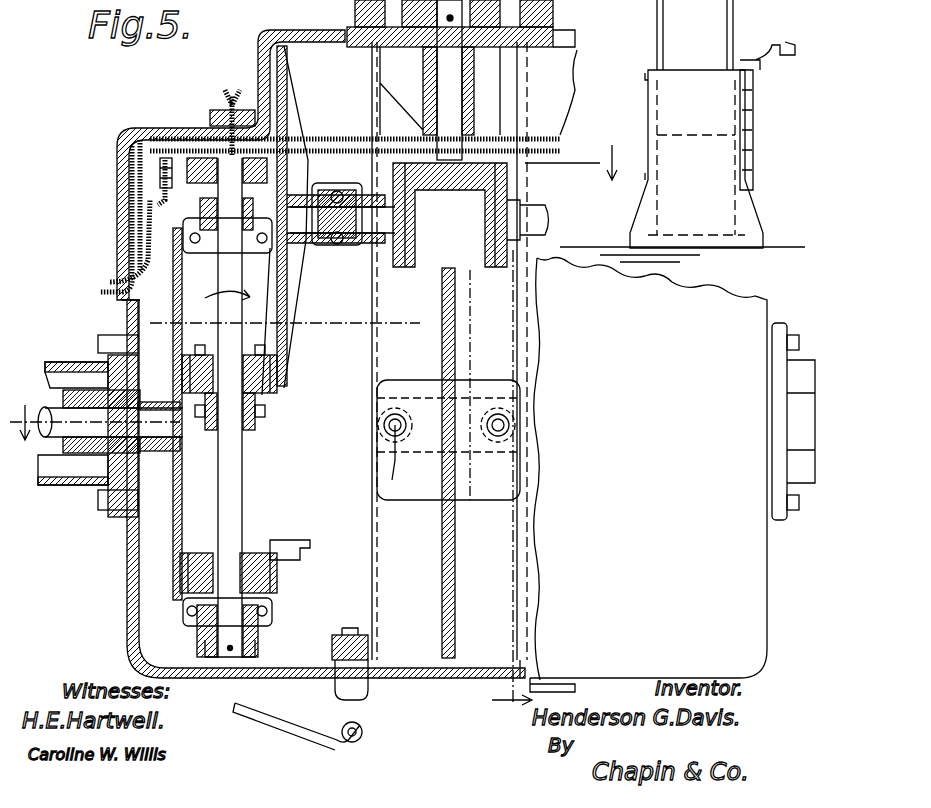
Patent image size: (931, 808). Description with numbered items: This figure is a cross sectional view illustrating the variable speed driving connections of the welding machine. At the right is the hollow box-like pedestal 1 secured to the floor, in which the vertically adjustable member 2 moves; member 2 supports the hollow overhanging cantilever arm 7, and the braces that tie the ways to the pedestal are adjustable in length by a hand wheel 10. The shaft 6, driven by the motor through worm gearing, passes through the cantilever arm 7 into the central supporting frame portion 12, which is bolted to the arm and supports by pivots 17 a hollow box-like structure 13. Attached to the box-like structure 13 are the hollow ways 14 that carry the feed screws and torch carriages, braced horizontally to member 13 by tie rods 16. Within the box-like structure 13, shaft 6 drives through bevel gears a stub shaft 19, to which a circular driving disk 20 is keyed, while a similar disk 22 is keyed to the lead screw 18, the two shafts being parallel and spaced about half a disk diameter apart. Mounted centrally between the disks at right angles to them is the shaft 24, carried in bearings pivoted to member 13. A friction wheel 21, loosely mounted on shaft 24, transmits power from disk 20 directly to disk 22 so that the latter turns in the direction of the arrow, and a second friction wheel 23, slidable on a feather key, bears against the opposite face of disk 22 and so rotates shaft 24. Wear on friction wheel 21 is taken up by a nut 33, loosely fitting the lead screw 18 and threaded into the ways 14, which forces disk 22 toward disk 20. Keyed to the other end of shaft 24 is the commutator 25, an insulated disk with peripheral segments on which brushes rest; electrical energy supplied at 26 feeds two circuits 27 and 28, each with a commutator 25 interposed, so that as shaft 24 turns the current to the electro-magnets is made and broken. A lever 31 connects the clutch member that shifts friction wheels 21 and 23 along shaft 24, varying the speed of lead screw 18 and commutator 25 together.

The pedestal 1 is at (705, 200).
The member 2 is at (735, 10).
The shaft 6 is at (512, 500).
The cantilever arm 7 is at (309, 292).
The hand wheel 10 is at (548, 215).
The central supporting frame portion 12 is at (473, 130).
The box-like structure 13 is at (130, 626).
The ways 14 is at (90, 487).
The tie rod 16 is at (270, 718).
The pivot 17 is at (498, 428).
The lead screw 18 is at (48, 440).
The stub shaft 19 is at (352, 238).
The circular driving disk 20 is at (285, 290).
The friction wheel 21 is at (262, 418).
The disk 22 is at (172, 522).
The second friction wheel 23 is at (280, 578).
The shaft 24 is at (240, 445).
The commutator 25 is at (288, 130).
The electrical energy supply 26 is at (222, 103).
The circuit 27 is at (150, 126).
The circuit 28 is at (540, 140).
The lever 31 is at (300, 542).
The nut 33 is at (75, 362).